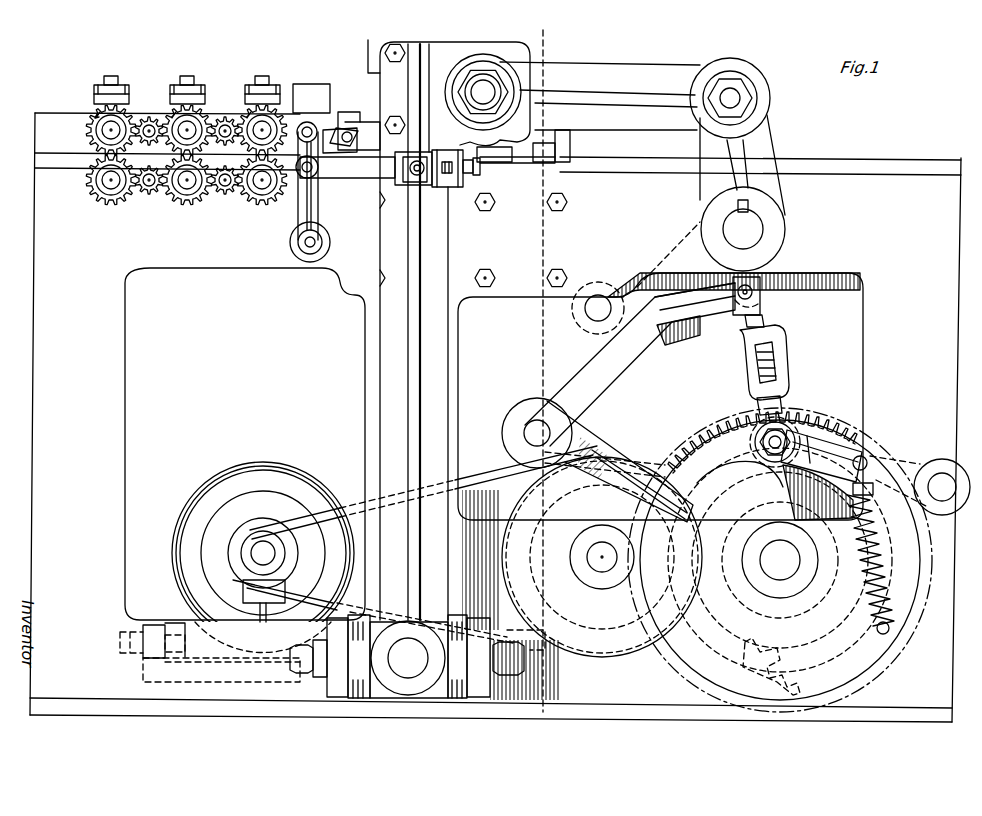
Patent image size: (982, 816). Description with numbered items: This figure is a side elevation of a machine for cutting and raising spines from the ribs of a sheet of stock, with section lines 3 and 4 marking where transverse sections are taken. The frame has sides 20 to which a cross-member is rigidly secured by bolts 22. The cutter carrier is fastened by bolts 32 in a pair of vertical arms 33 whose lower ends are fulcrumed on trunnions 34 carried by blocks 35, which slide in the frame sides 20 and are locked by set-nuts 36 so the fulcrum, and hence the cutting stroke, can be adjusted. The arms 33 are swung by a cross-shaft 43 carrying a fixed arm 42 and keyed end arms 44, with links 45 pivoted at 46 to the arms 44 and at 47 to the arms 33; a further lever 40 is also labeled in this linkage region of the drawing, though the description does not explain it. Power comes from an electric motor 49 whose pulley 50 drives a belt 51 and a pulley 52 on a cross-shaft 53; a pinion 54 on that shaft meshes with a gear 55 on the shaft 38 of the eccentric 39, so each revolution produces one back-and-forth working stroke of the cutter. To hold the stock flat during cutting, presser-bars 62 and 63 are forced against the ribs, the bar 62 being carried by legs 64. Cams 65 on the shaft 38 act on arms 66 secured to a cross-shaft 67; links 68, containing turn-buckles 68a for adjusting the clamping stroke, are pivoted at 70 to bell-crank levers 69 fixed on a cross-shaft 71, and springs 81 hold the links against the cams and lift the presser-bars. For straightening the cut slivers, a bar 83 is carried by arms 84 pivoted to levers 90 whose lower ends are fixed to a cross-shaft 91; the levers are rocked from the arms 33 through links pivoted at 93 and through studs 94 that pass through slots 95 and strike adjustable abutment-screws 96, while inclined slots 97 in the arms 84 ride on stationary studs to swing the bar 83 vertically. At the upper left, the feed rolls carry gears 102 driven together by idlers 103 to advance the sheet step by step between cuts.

The section line 3— 3 is at (560, 52).
The section line 4— 4 is at (376, 57).
The frame sides 20 is at (495, 417).
The bolts 22 is at (568, 204).
The bolts 32 is at (396, 118).
The vertical arms 33 is at (383, 378).
The trunnions 34 is at (406, 670).
The blocks 35 is at (440, 700).
The set-nuts 36 is at (313, 672).
The shaft 38 is at (783, 578).
The eccentric 39 is at (815, 522).
The lever 40 is at (622, 449).
The arm 42 is at (688, 337).
The cross-shaft 43 is at (757, 230).
The arms 44 is at (772, 132).
The links 45 is at (636, 63).
The pivot 46 is at (734, 95).
The pivot 47 is at (478, 88).
The electric motor 49 is at (263, 463).
The pulley 50 is at (256, 531).
The belt 51 is at (483, 480).
The pulley 52 is at (553, 498).
The cross-shaft 53 is at (597, 566).
The pinion 54 is at (605, 587).
The gear 55 is at (828, 432).
The presser-bar 62 is at (573, 140).
The presser-bar 63 is at (499, 162).
The legs 64 is at (548, 165).
The cams 65 is at (736, 477).
The arms 66 is at (851, 448).
The cross-shaft 67 is at (942, 473).
The links 68 is at (785, 384).
The turn-buckles 68a is at (776, 342).
The bell-crank levers 69 is at (672, 352).
The pivot 70 is at (754, 292).
The cross-shaft 71 is at (594, 311).
The springs 81 is at (868, 588).
The bar 83 is at (366, 124).
The arms 84 is at (324, 155).
The levers 90 is at (290, 240).
The cross-shaft 91 is at (306, 248).
The pivot 93 is at (303, 174).
The studs 94 is at (404, 186).
The slots 95 is at (446, 188).
The abutment-screws 96 is at (447, 160).
The inclined slots 97 is at (341, 154).
The gears 102 is at (272, 118).
The idlers 103 is at (226, 117).